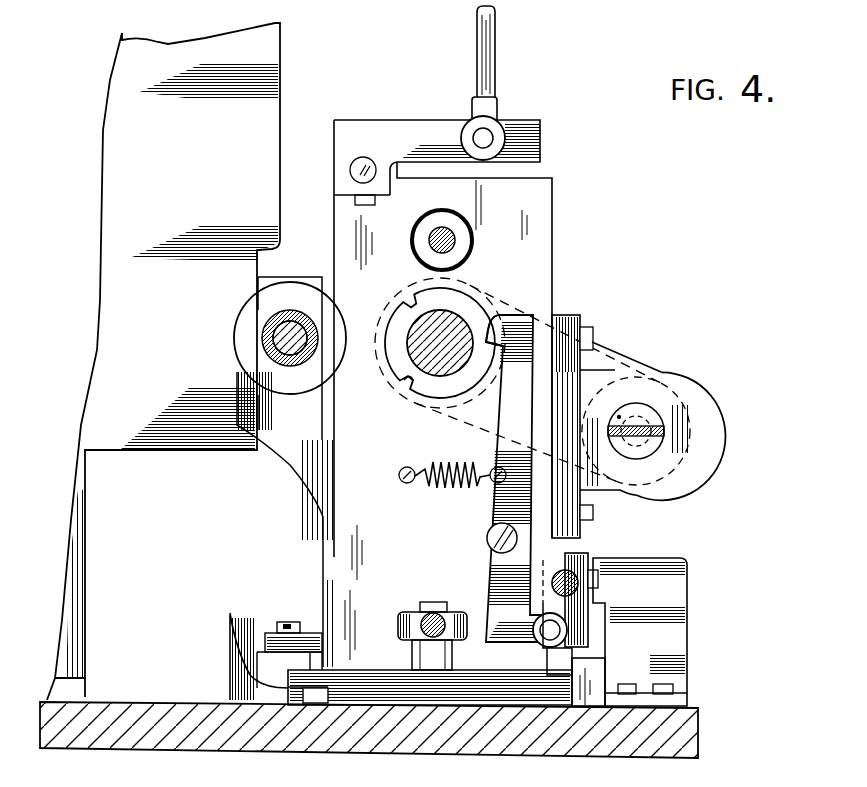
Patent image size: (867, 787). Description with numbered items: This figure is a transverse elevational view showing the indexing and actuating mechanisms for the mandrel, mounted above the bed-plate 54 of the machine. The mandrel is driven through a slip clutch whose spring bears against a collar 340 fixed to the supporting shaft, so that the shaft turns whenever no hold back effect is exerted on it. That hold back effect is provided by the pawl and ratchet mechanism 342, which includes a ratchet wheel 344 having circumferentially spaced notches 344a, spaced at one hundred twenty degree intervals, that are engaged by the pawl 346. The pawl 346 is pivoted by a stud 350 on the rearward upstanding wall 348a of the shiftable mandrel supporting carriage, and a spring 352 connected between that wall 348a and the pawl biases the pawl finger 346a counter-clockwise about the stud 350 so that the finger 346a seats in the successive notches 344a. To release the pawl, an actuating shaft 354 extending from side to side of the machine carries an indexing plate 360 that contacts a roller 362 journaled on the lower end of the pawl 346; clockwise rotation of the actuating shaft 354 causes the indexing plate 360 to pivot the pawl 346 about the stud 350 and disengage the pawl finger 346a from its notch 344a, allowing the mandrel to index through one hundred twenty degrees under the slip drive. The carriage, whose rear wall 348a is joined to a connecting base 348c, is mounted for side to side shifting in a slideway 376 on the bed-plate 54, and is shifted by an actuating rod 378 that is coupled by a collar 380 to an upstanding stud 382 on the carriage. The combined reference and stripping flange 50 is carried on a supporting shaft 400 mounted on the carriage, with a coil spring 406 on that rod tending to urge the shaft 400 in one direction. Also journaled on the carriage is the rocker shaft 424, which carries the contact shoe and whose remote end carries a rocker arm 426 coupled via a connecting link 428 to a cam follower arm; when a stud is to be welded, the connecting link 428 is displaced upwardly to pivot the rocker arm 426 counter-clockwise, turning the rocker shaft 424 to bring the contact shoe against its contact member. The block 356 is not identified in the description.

The combined reference and stripping flange 50 is at (133, 440).
The bed-plate 54 is at (134, 704).
The collar 340 is at (557, 200).
The pawl and ratchet mechanism 342 is at (512, 298).
The ratchet wheel 344 is at (399, 370).
The notches 344a is at (411, 396).
The pawl 346 is at (527, 407).
The pawl finger 346a is at (500, 316).
The rearward upstanding wall 348a is at (537, 238).
The connecting base 348c is at (495, 697).
The stud 350 is at (488, 540).
The spring 352 is at (446, 490).
The actuating shaft 354 is at (589, 566).
The block 356 is at (672, 622).
The indexing plate 360 is at (587, 629).
The roller 362 is at (548, 651).
The slideway 376 is at (597, 687).
The actuating rod 378 is at (429, 617).
The collar 380 is at (398, 630).
The upstanding stud 382 is at (418, 657).
The supporting shaft 400 is at (428, 240).
The coil spring 406 is at (438, 212).
The rocker shaft 424 is at (350, 170).
The rocker arm 426 is at (424, 130).
The connecting link 428 is at (494, 60).